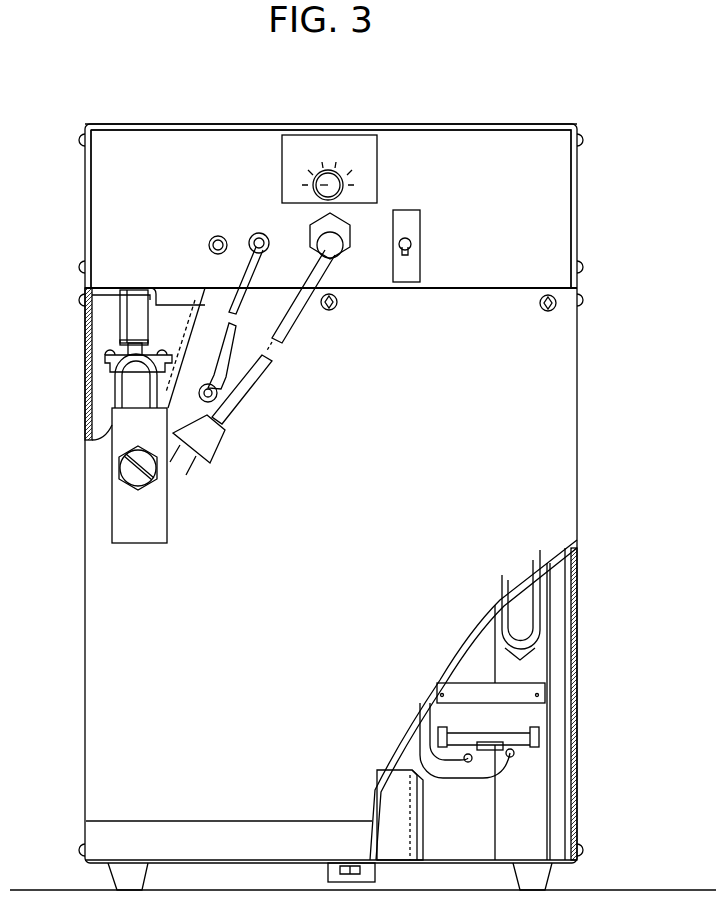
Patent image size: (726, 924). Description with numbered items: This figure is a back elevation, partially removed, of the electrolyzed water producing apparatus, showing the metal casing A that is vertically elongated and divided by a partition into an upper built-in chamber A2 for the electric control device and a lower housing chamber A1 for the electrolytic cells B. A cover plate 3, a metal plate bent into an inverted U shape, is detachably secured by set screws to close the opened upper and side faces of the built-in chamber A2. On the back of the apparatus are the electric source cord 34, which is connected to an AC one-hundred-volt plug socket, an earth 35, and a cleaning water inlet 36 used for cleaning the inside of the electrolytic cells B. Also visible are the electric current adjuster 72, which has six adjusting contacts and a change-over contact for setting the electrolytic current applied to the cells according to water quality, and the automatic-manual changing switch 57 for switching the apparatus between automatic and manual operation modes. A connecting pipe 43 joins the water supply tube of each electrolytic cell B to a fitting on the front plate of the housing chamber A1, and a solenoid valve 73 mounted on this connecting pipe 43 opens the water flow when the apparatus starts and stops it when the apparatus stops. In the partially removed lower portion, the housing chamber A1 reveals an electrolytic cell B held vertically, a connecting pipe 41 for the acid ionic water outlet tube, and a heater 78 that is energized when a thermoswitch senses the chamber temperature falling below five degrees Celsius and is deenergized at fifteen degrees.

The cover plate 3 is at (388, 123).
The casing A is at (580, 233).
The housing chamber A1 is at (530, 665).
The built-in chamber A2 is at (512, 136).
The electric current adjuster 72 is at (340, 190).
The automatic-manual changing switch 57 is at (410, 250).
The earth 35 is at (232, 282).
The electric source cord 34 is at (297, 326).
The solenoid valve 73 is at (127, 327).
The connecting pipe 43 is at (125, 383).
The cleaning water inlet 36 is at (158, 485).
The connecting pipe 41 is at (535, 597).
The heater 78 is at (512, 757).
The electrolytic cell B is at (423, 818).